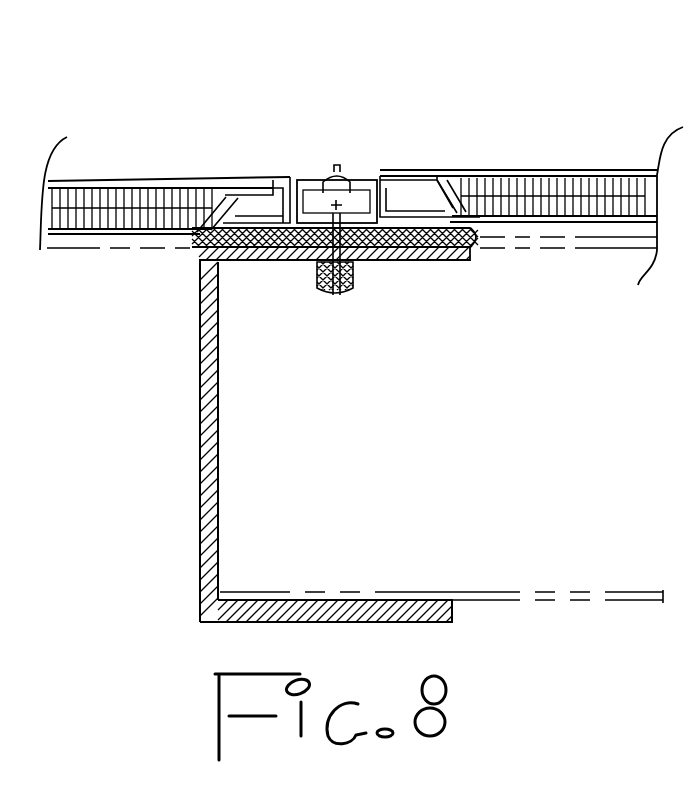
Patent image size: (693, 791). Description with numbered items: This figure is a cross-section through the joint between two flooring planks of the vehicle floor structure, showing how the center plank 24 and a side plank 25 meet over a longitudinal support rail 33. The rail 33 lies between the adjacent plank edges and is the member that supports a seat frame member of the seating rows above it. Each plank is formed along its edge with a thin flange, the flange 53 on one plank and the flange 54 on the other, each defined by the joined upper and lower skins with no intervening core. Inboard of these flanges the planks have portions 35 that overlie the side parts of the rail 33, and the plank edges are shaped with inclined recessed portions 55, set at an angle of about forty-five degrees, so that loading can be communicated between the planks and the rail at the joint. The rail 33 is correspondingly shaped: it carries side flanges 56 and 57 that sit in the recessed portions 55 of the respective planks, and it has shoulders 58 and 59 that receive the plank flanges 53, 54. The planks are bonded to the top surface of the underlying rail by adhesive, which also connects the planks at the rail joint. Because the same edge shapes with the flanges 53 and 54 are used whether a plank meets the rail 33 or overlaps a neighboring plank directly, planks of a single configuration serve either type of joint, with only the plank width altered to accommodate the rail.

The center plank 24 is at (587, 165).
The side plank 25 is at (240, 88).
The longitudinal support rail 33 is at (324, 143).
The plank portions overlying the rail 35 is at (412, 172).
The flange 53 is at (275, 142).
The flange 54 is at (425, 172).
The recessed portion 55 is at (215, 200).
The side flange 56 is at (156, 234).
The side flange 57 is at (512, 223).
The shoulder 58 is at (240, 190).
The shoulder 59 is at (412, 165).